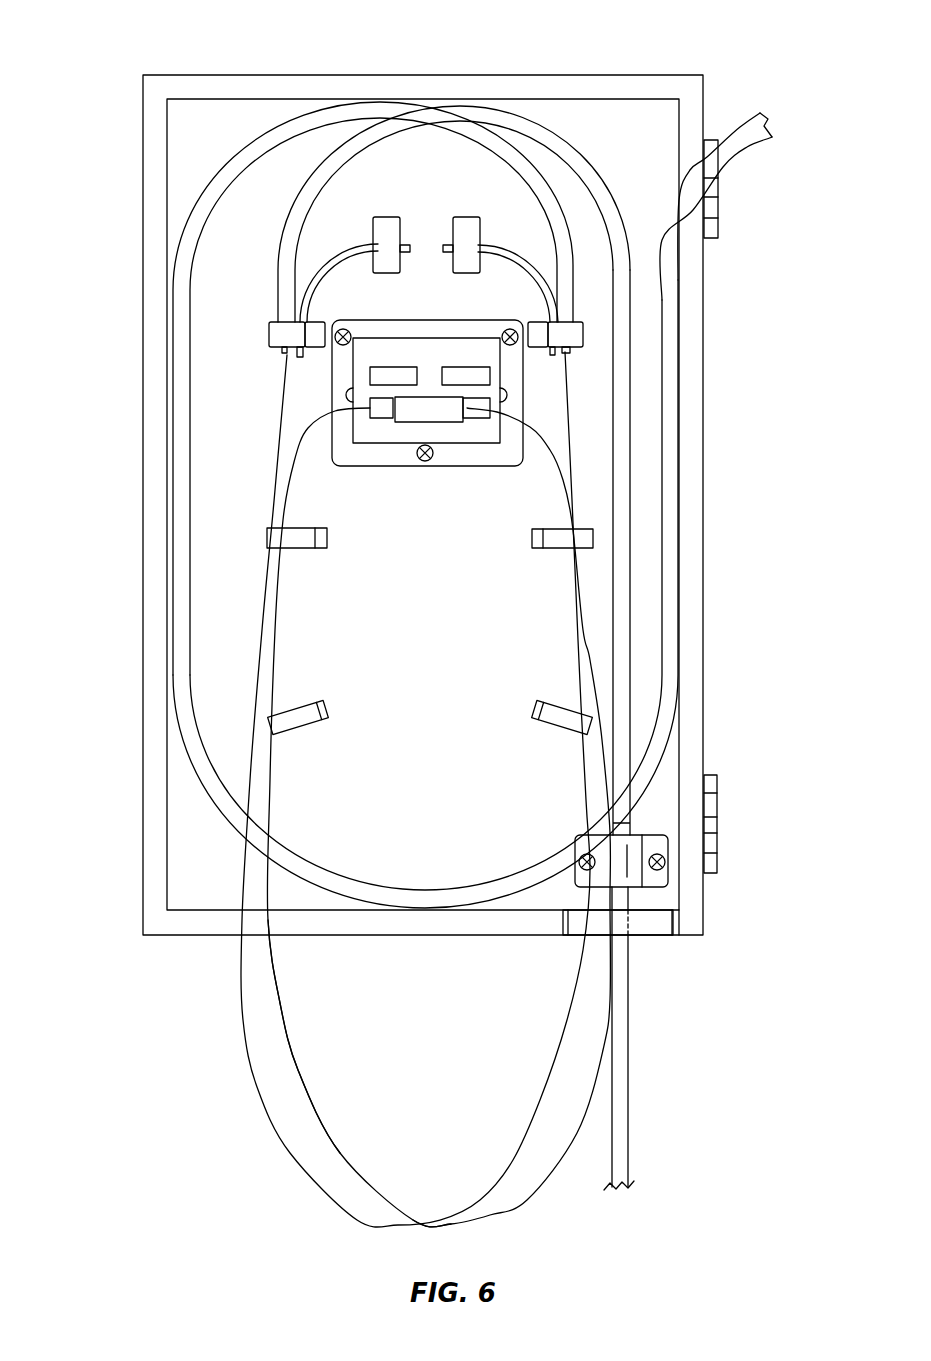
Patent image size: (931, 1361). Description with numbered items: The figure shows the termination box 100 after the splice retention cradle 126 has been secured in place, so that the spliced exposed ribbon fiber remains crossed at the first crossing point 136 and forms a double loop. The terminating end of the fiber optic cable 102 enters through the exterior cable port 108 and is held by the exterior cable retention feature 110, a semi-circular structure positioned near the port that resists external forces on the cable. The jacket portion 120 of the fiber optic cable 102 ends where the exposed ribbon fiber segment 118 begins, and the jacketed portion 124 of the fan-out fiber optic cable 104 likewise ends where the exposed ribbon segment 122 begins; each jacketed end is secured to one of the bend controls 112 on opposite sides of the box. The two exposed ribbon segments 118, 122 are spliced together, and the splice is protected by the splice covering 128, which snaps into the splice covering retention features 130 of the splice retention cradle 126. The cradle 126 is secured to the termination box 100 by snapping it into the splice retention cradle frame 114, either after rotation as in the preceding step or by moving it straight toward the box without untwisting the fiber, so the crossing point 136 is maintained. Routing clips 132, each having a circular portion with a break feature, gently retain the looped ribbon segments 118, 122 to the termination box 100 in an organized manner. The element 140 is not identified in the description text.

The termination box 100 is at (251, 41).
The fiber optic cable 102 is at (642, 1100).
The fan-out fiber optic cable 104 is at (751, 158).
The exterior cable port 108 is at (638, 950).
The exterior cable retention feature 110 is at (658, 845).
The bend controls 112 is at (325, 262).
The splice retention cradle frame 114 is at (377, 467).
The exposed ribbon fiber segment 118 is at (570, 1020).
The jacket portion 120 is at (600, 170).
The exposed ribbon segment 122 is at (298, 1068).
The jacketed portion 124 is at (245, 142).
The splice retention cradle 126 is at (427, 404).
The splice covering 128 is at (407, 425).
The splice covering retention features 130 is at (477, 398).
The routing clips 132 is at (297, 548).
The first crossing point 136 is at (394, 1240).
The cable 140 is at (622, 467).